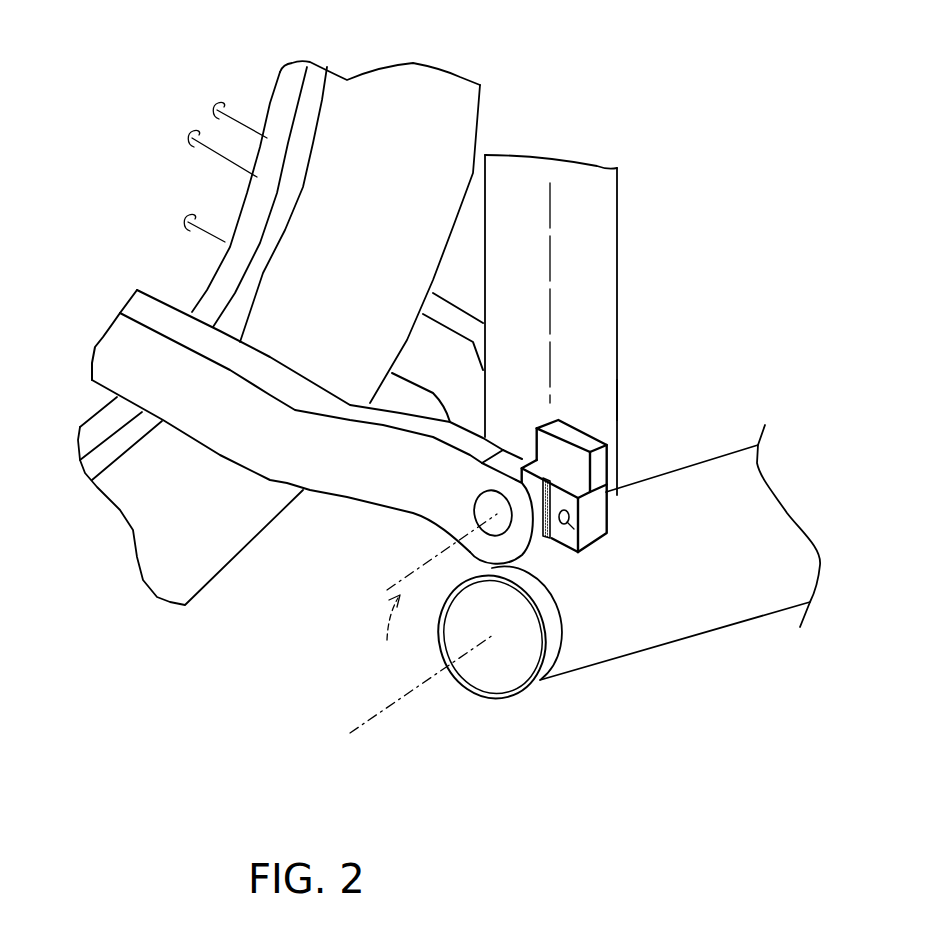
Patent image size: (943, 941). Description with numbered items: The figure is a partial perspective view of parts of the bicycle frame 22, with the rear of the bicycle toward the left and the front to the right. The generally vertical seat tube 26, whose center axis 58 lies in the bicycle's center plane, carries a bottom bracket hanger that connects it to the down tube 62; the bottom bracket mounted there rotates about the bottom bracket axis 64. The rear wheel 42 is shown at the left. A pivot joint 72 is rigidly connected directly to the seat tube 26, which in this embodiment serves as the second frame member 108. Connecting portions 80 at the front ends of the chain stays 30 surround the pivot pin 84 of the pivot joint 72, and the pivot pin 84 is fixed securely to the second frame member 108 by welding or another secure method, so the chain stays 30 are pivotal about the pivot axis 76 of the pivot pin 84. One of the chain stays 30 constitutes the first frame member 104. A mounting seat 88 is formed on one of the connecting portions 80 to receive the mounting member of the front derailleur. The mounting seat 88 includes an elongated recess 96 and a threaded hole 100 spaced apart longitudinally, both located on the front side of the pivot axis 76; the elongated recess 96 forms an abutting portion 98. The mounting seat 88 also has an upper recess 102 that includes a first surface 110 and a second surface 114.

The frame 22 is at (683, 487).
The seat tube 26 is at (597, 173).
The chain stays 30 is at (157, 312).
The rear wheel 42 is at (400, 107).
The center axis 58 is at (550, 268).
The down tube 62 is at (585, 605).
The bottom bracket axis 64 is at (377, 713).
The pivot joint 72 is at (386, 636).
The pivot axis 76 is at (413, 570).
The connecting portions 80 is at (485, 548).
The pivot pin 84 is at (476, 507).
The mounting seat 88 is at (600, 513).
The elongated recess 96 is at (548, 538).
The abutting portion 98 is at (520, 482).
The threaded hole 100 is at (581, 489).
The upper recess 102 is at (548, 447).
The first frame member 104 is at (357, 470).
The second frame member 108 is at (612, 400).
The first surface 110 is at (533, 462).
The second surface 114 is at (612, 490).